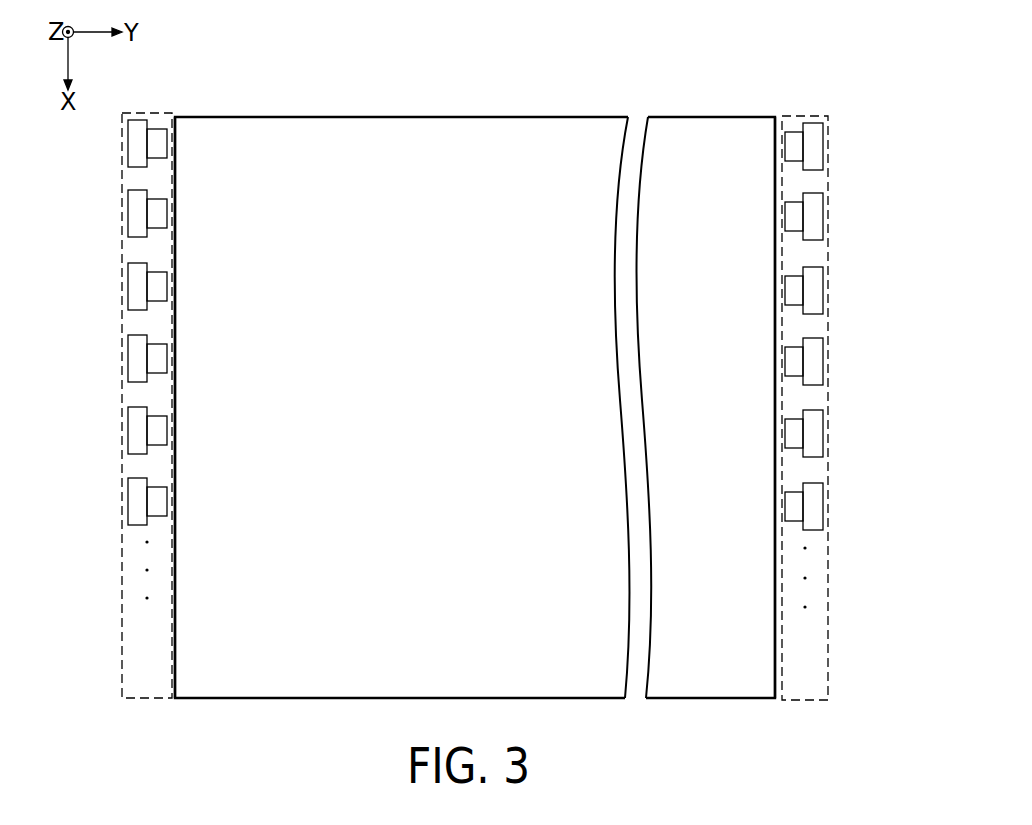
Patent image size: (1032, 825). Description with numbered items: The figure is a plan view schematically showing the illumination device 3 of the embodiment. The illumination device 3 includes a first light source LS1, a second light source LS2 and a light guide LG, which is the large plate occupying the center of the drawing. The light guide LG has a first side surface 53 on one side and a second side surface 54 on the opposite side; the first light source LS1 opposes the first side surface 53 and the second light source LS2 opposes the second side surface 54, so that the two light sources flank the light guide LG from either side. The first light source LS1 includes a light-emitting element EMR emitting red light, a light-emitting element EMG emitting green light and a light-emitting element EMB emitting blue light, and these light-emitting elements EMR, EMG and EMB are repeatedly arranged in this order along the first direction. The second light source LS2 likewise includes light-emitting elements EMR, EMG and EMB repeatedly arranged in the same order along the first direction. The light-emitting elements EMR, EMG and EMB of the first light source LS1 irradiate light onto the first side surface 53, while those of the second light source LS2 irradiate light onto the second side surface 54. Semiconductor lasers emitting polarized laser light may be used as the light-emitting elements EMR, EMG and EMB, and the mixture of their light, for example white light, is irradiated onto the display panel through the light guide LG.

The illumination device 3 is at (222, 86).
The light guide LG is at (432, 115).
The light-emitting element emitting red light EMR is at (128, 145).
The light-emitting element emitting green light EMG is at (128, 215).
The light-emitting element emitting blue light EMB is at (128, 288).
The first side surface 53 is at (162, 642).
The second side surface 54 is at (788, 655).
The first light source LS1 is at (147, 699).
The second light source LS2 is at (806, 701).